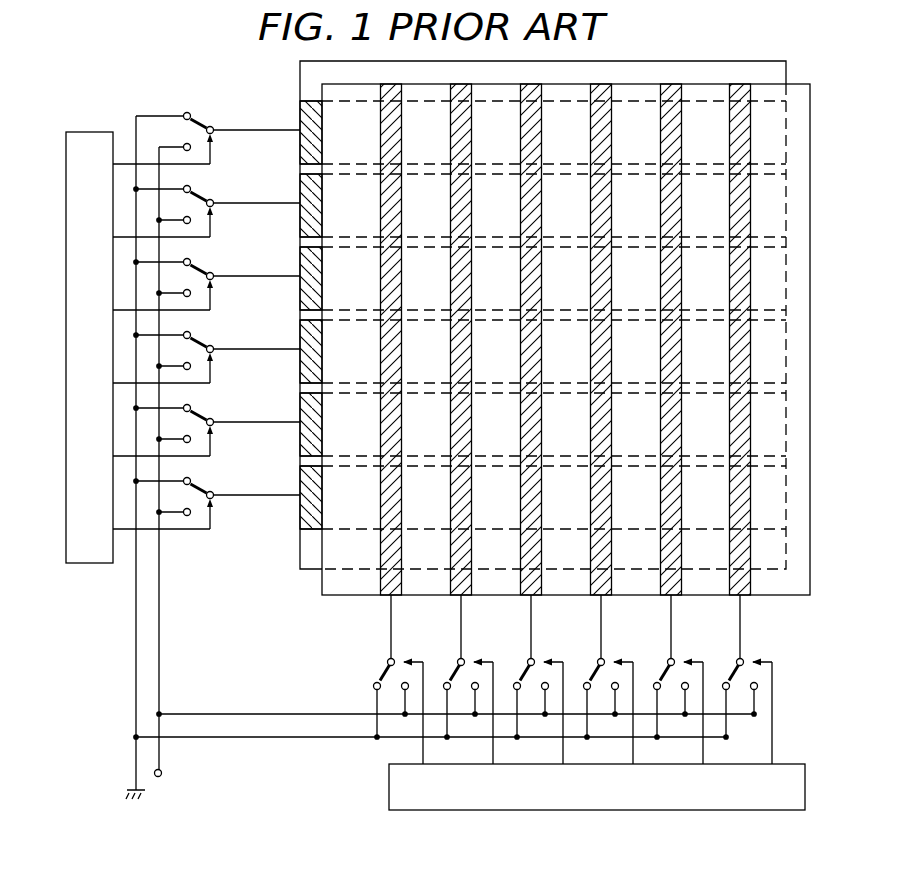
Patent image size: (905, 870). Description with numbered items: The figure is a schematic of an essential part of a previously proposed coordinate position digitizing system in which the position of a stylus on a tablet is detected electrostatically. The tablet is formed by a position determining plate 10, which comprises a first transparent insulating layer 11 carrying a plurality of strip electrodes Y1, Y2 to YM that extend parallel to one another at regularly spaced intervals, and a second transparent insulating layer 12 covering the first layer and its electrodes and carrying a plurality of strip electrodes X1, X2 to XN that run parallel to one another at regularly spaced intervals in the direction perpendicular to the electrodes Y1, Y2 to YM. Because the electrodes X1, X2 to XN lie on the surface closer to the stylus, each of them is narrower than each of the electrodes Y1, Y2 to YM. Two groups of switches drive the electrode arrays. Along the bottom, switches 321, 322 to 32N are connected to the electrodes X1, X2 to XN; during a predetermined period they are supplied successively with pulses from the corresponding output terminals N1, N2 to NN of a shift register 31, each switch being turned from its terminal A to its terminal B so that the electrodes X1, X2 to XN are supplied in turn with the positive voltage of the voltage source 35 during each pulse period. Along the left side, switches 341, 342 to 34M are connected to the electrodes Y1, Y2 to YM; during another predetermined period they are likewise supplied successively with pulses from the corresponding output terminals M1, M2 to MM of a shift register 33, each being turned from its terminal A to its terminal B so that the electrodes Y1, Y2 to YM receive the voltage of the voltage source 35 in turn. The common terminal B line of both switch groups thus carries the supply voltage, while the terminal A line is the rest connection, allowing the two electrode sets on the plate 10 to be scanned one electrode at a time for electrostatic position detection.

The position determining plate 10 is at (313, 634).
The first transparent insulating layer 11 is at (300, 556).
The second transparent insulating layer 12 is at (782, 600).
The shift register 31 is at (389, 782).
The shift register 33 is at (88, 566).
The voltage source +Vcc 35 is at (163, 774).
The switch 321 is at (385, 672).
The switch 322 is at (455, 672).
The switch 32N is at (735, 672).
The switch 341 is at (199, 117).
The switch 342 is at (199, 205).
The switch 34M is at (197, 485).
The strip electrode X1 is at (401, 281).
The strip electrode X2 is at (472, 281).
The strip electrode XN is at (751, 281).
The strip electrode Y1 is at (300, 153).
The strip electrode Y2 is at (300, 217).
The strip electrode YM is at (300, 508).
The output terminal M1 is at (144, 167).
The output terminal M2 is at (144, 241).
The output terminal MM is at (142, 533).
The output terminal N1 is at (426, 783).
The output terminal N2 is at (498, 783).
The output terminal NN is at (774, 783).
The terminal A is at (267, 401).
The terminal B is at (283, 418).